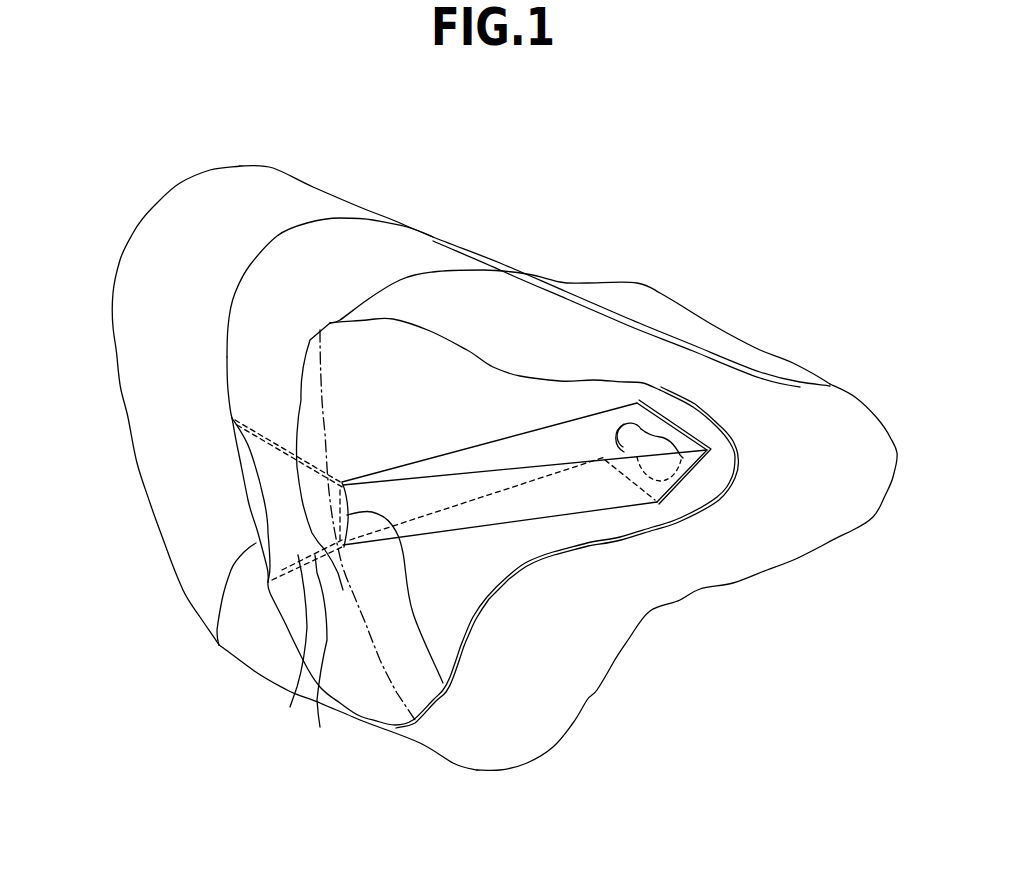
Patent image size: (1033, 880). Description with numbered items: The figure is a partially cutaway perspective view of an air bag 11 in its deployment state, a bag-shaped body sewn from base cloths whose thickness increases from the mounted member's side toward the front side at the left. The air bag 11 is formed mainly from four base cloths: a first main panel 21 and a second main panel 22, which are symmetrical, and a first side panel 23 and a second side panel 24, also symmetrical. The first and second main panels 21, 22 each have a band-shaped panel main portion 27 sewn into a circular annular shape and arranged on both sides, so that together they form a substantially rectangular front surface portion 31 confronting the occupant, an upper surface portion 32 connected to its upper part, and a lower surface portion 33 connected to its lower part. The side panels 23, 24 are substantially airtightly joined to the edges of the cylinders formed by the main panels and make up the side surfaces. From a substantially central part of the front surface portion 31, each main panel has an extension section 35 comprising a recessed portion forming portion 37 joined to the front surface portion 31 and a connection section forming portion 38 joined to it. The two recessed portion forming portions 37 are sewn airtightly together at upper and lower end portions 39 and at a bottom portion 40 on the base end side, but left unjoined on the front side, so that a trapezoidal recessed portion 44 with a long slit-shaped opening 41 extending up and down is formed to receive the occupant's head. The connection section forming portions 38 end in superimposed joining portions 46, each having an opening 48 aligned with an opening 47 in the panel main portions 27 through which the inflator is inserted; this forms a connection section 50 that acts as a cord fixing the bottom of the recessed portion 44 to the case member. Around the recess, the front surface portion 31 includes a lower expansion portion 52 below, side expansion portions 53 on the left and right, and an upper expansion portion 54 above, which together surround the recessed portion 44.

The air bag 11 is at (523, 165).
The first main panel 21 is at (310, 195).
The second main panel 22 is at (390, 222).
The first side panel 23 is at (413, 348).
The second side panel 24 is at (712, 568).
The panel main portion 27 is at (270, 180).
The front surface portion 31 is at (200, 593).
The upper surface portion 32 is at (423, 247).
The lower surface portion 33 is at (587, 703).
The extension section 35 is at (445, 487).
The recessed portion forming portion 37 is at (237, 487).
The connection section forming portion 38 is at (488, 453).
The upper and lower end portions 39 is at (275, 440).
The bottom portion 40 is at (443, 683).
The opening 41 is at (233, 438).
The recessed portion 44 is at (223, 607).
The joining portion 46 is at (660, 430).
The opening 47 is at (617, 433).
The opening 48 is at (620, 427).
The connection section 50 is at (517, 507).
The lower expansion portion 52 is at (270, 655).
The side expansion portion 53 is at (175, 540).
The upper expansion portion 54 is at (213, 300).